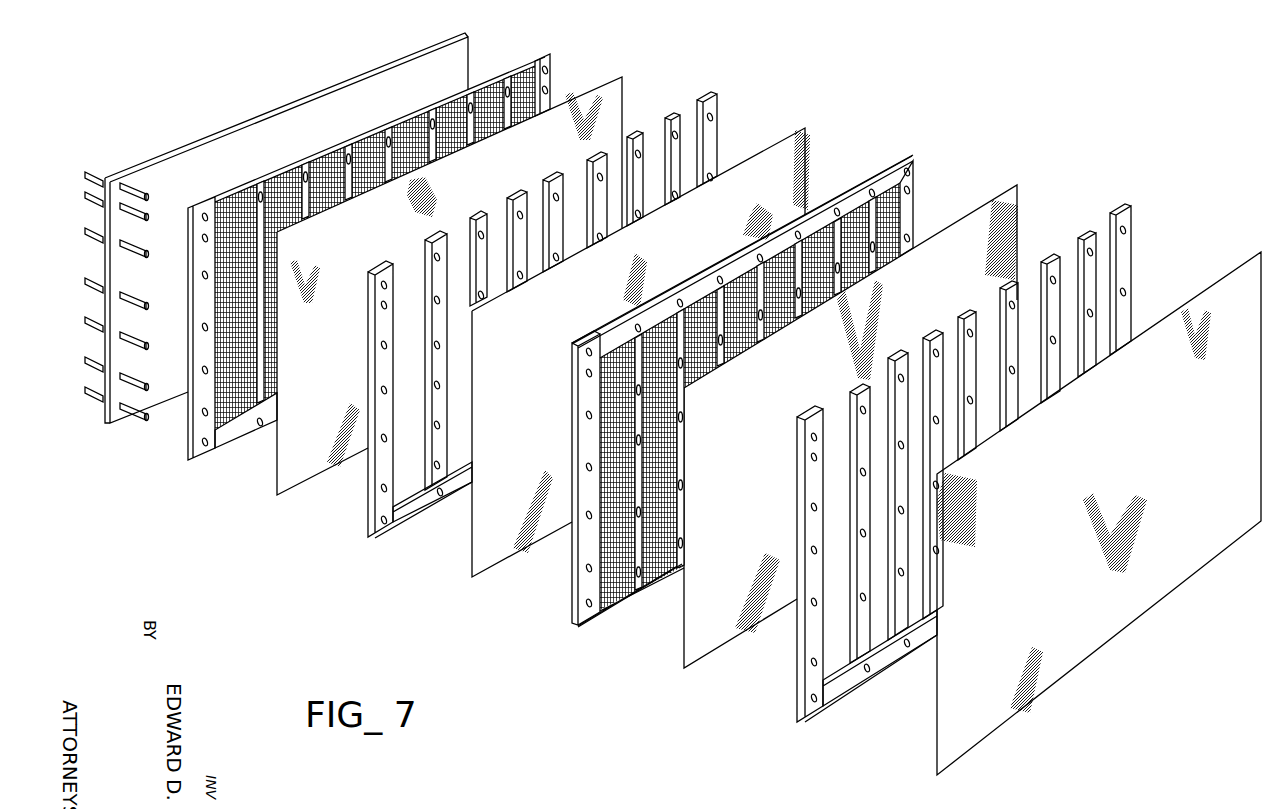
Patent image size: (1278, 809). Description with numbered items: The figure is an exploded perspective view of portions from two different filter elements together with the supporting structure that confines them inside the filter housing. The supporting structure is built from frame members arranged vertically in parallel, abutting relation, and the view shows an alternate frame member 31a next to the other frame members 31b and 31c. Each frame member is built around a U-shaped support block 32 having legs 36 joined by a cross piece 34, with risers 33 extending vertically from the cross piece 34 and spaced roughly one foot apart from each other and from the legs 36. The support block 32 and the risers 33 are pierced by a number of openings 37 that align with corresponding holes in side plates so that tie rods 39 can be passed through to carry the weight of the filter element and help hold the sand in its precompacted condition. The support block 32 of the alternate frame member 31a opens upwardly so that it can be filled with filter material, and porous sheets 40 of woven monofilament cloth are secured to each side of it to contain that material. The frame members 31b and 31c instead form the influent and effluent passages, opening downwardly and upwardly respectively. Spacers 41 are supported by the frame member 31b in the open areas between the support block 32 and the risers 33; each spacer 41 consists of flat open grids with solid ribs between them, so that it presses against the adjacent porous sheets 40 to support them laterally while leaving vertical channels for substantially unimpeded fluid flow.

The alternate frame member 31a is at (363, 537).
The influent frame member 31b is at (565, 623).
The effluent frame member 31c is at (184, 460).
The U-shaped support block 32 is at (208, 306).
The risers 33 is at (517, 200).
The cross piece 34 is at (243, 430).
The legs 36 is at (372, 303).
The openings 37 is at (860, 407).
The tie rods 39 is at (72, 365).
The porous sheets 40 is at (277, 494).
The spacers 41 is at (226, 253).